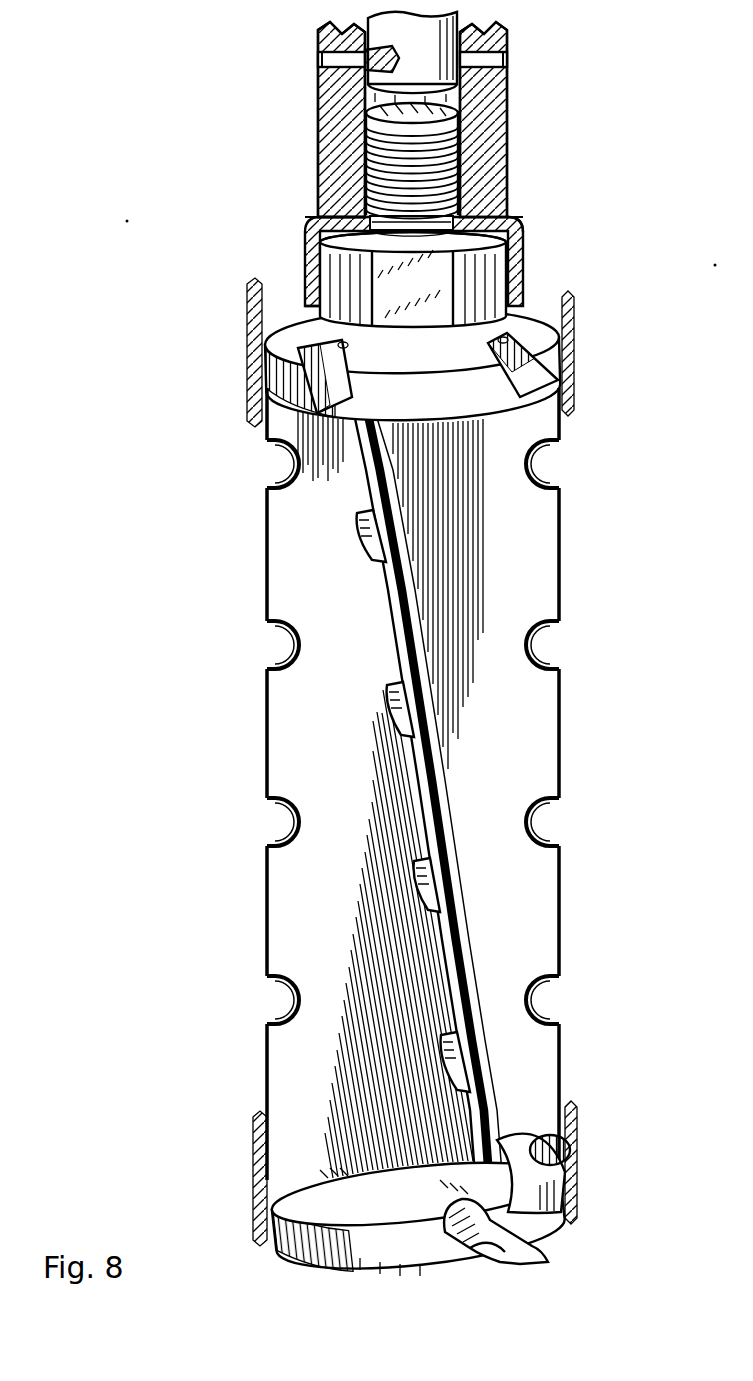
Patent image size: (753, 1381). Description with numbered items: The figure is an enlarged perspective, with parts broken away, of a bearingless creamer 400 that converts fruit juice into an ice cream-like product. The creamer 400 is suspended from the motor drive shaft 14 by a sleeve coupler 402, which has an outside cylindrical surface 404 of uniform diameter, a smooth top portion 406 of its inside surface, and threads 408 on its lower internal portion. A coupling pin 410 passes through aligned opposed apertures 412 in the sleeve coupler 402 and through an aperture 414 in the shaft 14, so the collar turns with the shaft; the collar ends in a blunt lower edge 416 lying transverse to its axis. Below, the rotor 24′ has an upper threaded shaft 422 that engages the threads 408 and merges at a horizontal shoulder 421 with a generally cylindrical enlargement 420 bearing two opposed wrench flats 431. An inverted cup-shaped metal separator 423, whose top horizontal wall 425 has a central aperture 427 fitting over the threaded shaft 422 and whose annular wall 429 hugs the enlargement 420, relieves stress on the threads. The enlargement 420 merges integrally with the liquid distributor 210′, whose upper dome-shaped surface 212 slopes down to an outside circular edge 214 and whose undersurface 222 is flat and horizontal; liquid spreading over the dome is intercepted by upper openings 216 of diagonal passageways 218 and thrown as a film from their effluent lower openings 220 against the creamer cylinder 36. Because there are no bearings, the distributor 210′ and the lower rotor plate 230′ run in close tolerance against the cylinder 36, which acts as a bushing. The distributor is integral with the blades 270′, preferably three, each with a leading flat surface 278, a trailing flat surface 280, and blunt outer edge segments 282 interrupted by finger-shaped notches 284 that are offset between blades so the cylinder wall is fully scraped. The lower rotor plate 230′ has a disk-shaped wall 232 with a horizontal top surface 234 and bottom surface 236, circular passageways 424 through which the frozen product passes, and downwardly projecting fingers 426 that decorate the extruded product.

The motor drive shaft 14 is at (458, 16).
The rotor 24′ is at (207, 492).
The creamer cylinder 36 is at (577, 304).
The liquid distributor 210′ is at (553, 326).
The upper dome-shaped surface 212 is at (403, 359).
The outside circular edge 214 is at (276, 380).
The upper opening 216 is at (350, 340).
The diagonal passageway 218 is at (320, 346).
The effluent lower opening 220 is at (300, 440).
The undersurface 222 is at (462, 470).
The lower rotor plate 230′ is at (317, 1233).
The disk-shaped wall 232 is at (398, 1261).
The top surface 234 is at (356, 1206).
The bottom surface 236 is at (378, 1273).
The blade 270′ is at (390, 639).
The leading flat surface 278 is at (493, 769).
The trailing flat surface 280 is at (417, 650).
The outer edge segment 282 is at (272, 432).
The notch 284 is at (290, 462).
The creamer 400 is at (207, 256).
The sleeve coupler 402 is at (500, 118).
The outside cylindrical surface 404 is at (458, 172).
The top portion of inside surface 406 is at (340, 96).
The threads 408 is at (458, 200).
The coupling pin 410 is at (365, 62).
The opposed apertures 412 is at (322, 58).
The aperture in motor drive shaft 414 is at (372, 45).
The blunt lower edge 416 is at (322, 232).
The enlargement 420 is at (530, 247).
The horizontal shoulder 421 is at (303, 236).
The upper threaded shaft 422 is at (458, 152).
The separator 423 is at (538, 254).
The top horizontal wall 425 is at (328, 198).
The downwardly projecting fingers 426 is at (548, 1250).
The central aperture 427 is at (308, 282).
The annular wall 429 is at (318, 262).
The wrench flats 431 is at (393, 302).
The circular passageways 424 is at (555, 1152).